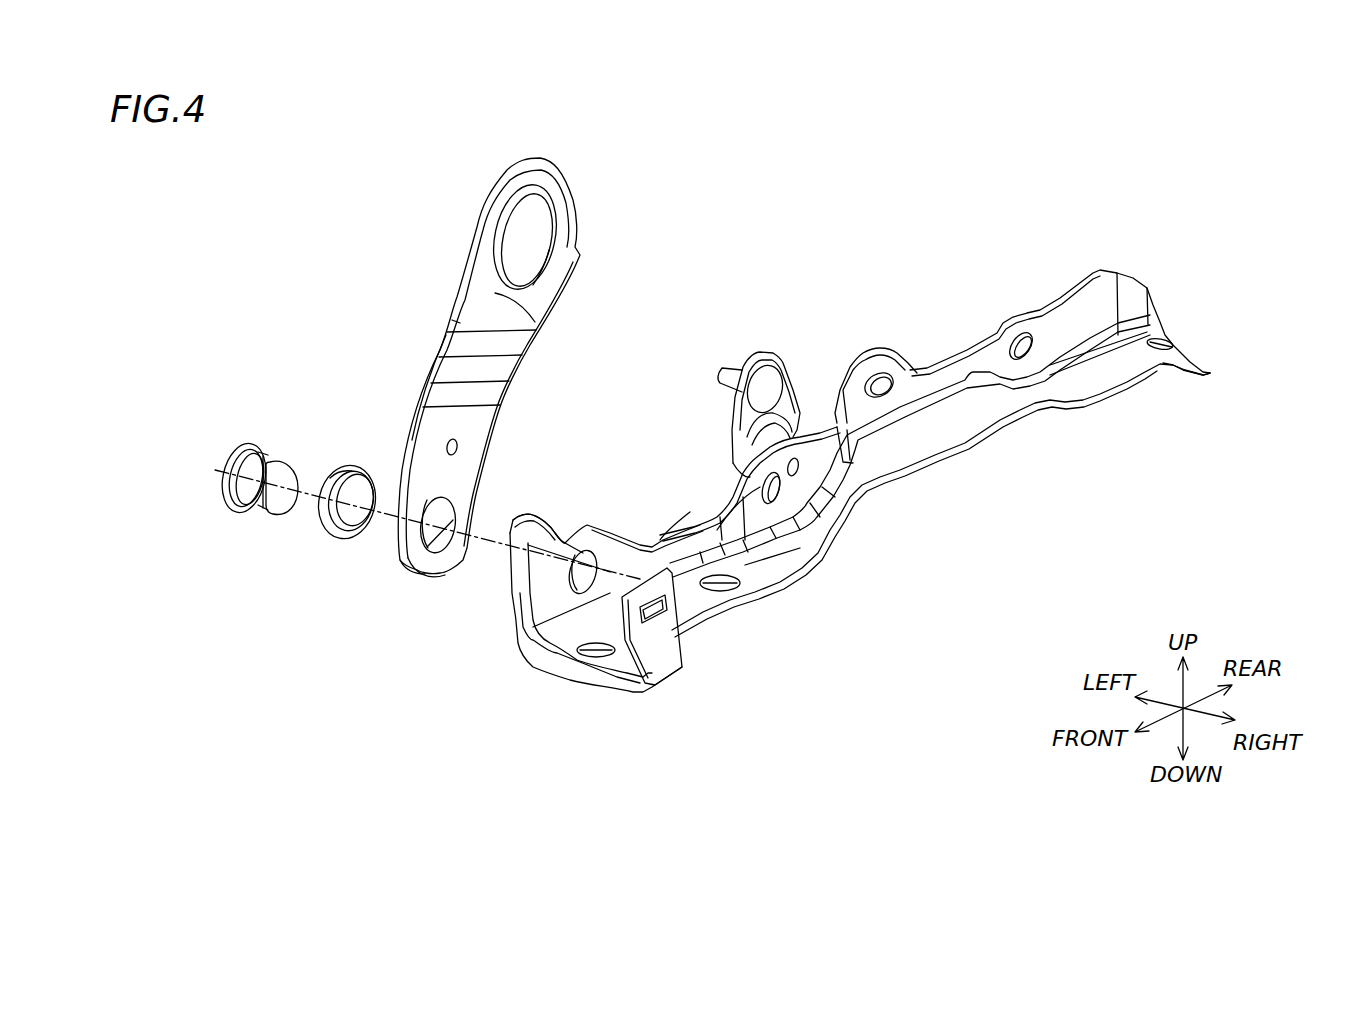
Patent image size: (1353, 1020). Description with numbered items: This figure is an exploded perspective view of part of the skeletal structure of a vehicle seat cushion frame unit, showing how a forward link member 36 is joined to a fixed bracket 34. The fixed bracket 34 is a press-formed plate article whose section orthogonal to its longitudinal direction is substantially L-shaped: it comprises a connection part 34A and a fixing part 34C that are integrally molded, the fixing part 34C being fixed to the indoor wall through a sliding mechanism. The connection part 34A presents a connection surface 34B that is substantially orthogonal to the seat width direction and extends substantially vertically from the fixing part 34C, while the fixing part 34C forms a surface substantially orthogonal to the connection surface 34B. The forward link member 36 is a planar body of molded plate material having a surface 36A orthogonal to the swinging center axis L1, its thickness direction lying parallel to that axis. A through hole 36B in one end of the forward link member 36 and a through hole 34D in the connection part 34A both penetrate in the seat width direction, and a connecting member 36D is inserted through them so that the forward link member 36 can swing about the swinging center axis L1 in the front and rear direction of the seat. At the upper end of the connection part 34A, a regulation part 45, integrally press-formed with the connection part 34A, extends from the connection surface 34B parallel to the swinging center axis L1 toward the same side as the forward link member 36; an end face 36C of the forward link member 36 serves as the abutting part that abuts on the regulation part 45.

The fixed bracket 34 is at (955, 453).
The connection part 34A is at (550, 610).
The connection surface 34B is at (600, 541).
The fixing part 34C is at (757, 572).
The through hole 34D is at (610, 583).
The forward link member 36 is at (455, 298).
The surface 36A is at (523, 303).
The end face 36C is at (413, 438).
The connecting member 36D is at (400, 474).
The through hole 36B is at (436, 553).
The regulation part 45 is at (535, 512).
The swinging center axis L1 is at (497, 550).